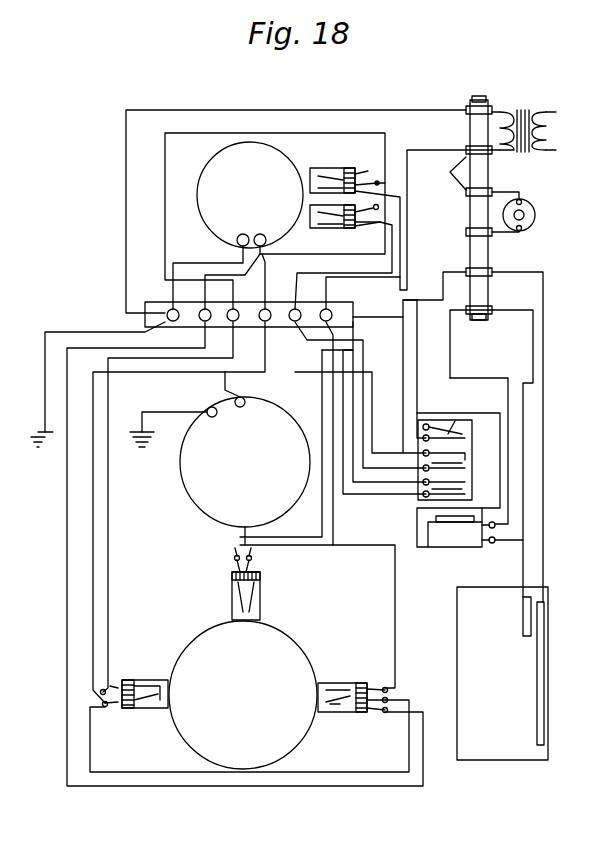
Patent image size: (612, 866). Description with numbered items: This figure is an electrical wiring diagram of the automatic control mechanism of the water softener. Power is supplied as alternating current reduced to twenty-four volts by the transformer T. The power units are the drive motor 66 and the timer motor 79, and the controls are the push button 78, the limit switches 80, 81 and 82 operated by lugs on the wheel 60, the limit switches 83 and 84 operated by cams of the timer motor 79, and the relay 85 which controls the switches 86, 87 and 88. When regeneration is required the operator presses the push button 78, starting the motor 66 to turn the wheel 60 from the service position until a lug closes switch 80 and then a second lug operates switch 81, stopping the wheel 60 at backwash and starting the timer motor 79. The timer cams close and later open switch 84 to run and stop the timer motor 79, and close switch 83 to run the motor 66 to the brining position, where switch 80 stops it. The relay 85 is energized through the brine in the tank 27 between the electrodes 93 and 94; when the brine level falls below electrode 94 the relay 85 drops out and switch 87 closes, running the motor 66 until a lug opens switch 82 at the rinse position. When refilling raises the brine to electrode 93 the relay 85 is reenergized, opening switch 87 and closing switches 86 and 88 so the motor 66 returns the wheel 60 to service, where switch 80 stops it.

The transformer T is at (534, 110).
The push button 78 is at (536, 215).
The timer motor 79 is at (208, 168).
The limit switch 83 is at (346, 170).
The limit switch 84 is at (322, 228).
The drive motor 66 is at (192, 489).
The limit switch 80 is at (262, 596).
The wheel 60 is at (312, 661).
The limit switch 82 is at (144, 710).
The limit switch 81 is at (334, 712).
The switch 86 is at (452, 425).
The switch 87 is at (475, 468).
The switch 88 is at (477, 489).
The relay 85 is at (445, 548).
The brine tank 27 is at (457, 664).
The electrode 93 is at (523, 622).
The electrode 94 is at (537, 690).